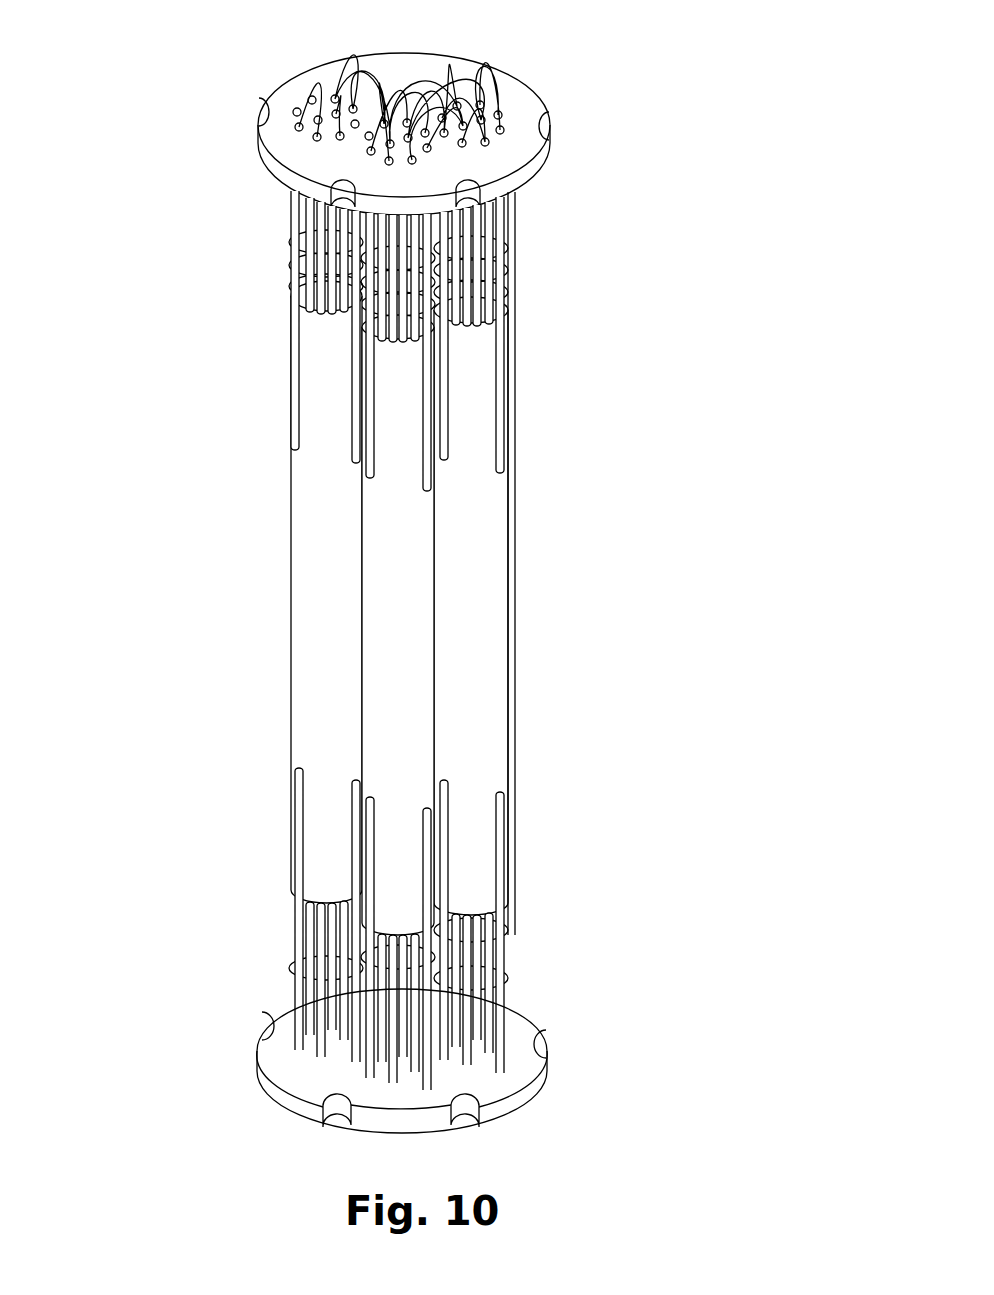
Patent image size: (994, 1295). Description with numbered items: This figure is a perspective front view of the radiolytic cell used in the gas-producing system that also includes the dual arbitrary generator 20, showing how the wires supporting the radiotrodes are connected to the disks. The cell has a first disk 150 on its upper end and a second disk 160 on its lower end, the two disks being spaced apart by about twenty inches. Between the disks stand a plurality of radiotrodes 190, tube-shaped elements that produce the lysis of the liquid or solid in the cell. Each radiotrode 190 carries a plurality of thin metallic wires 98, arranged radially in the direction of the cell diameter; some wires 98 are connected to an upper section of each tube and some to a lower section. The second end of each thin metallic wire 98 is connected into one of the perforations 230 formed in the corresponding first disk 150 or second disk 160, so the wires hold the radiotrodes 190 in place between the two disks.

The dual arbitrary generator 20 is at (245, 525).
The thin metallic wires 98 is at (505, 278).
The first disk 150 is at (533, 163).
The second disk 160 is at (533, 1082).
The radiotrodes 190 is at (477, 657).
The perforations 230 is at (505, 102).